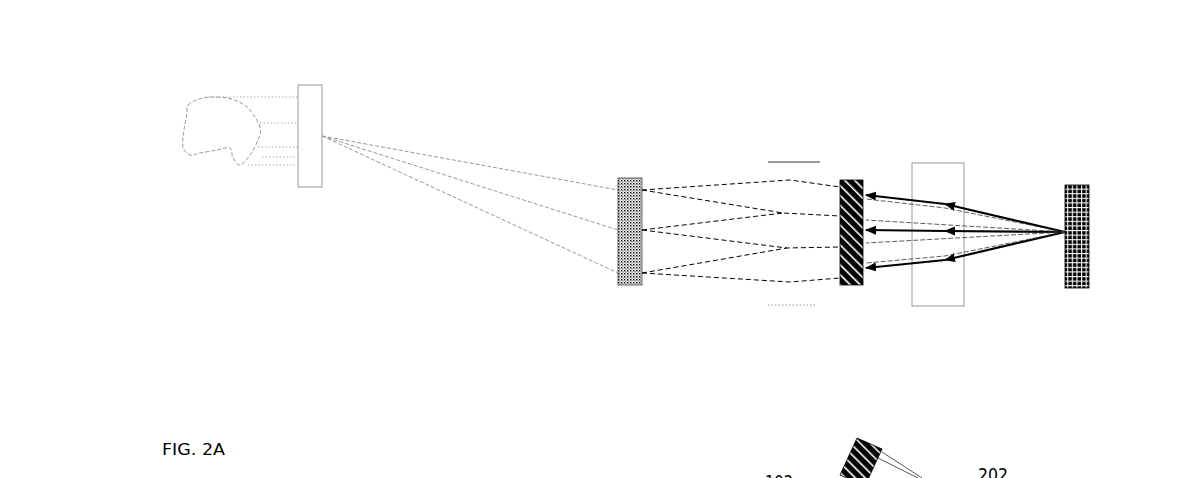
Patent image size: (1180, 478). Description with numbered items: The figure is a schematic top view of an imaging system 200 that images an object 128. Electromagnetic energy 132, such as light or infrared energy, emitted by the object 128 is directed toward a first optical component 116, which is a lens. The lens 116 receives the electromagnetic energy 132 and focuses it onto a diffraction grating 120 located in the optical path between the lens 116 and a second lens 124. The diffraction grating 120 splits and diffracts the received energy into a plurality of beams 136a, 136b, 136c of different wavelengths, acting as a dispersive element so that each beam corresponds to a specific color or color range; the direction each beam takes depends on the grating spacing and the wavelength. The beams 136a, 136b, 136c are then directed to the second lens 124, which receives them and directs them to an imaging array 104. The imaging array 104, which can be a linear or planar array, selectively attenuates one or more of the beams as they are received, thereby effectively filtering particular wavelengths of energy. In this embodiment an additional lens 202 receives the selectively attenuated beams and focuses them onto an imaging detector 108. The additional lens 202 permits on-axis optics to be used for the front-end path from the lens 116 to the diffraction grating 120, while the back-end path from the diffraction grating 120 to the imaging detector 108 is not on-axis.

The imaging system 200 is at (270, 340).
The object 128 is at (192, 103).
The electromagnetic energy 132 is at (262, 95).
The first optical component 116 is at (310, 84).
The diffraction grating 120 is at (628, 177).
The beam 136a is at (710, 183).
The beam 136b is at (713, 239).
The beam 136c is at (747, 279).
The second lens 124 is at (793, 160).
The imaging detector 108 is at (852, 178).
The additional lens 202 is at (977, 63).
The imaging array 104 is at (1091, 187).